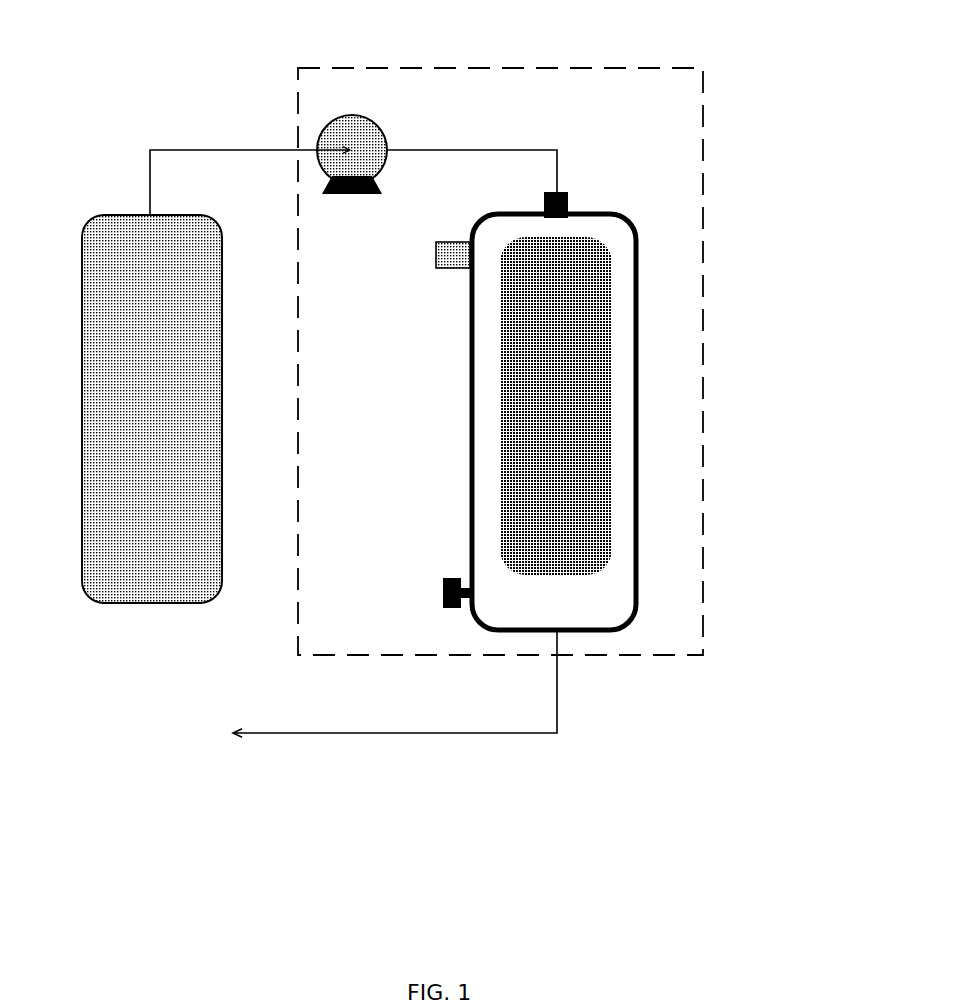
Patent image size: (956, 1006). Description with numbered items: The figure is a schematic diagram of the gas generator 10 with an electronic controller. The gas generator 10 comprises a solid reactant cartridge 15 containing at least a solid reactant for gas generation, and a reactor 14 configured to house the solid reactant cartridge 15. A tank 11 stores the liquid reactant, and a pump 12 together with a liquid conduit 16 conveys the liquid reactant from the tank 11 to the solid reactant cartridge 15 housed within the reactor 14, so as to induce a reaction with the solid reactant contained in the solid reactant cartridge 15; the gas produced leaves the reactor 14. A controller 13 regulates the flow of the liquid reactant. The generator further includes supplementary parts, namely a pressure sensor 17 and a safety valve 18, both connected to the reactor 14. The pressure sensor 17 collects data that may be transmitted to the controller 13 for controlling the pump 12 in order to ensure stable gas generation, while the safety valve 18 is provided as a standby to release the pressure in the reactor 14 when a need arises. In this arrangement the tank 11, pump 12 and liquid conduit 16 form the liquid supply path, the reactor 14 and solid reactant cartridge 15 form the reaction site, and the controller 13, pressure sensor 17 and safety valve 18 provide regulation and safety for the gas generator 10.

The gas generator 10 is at (662, 727).
The tank 11 is at (158, 611).
The pump 12 is at (308, 129).
The controller 13 is at (710, 178).
The reactor 14 is at (654, 483).
The solid reactant cartridge 15 is at (624, 533).
The liquid conduit 16 is at (472, 127).
The pressure sensor 17 is at (448, 282).
The safety valve 18 is at (438, 570).